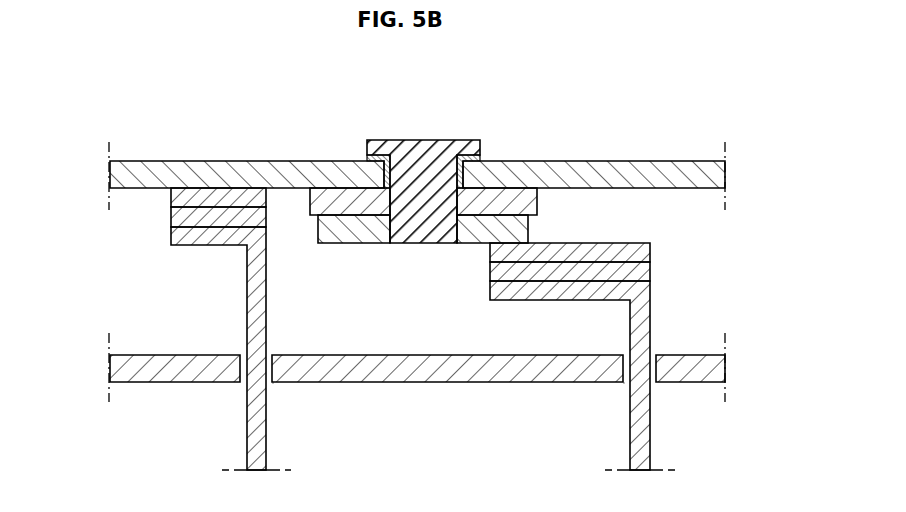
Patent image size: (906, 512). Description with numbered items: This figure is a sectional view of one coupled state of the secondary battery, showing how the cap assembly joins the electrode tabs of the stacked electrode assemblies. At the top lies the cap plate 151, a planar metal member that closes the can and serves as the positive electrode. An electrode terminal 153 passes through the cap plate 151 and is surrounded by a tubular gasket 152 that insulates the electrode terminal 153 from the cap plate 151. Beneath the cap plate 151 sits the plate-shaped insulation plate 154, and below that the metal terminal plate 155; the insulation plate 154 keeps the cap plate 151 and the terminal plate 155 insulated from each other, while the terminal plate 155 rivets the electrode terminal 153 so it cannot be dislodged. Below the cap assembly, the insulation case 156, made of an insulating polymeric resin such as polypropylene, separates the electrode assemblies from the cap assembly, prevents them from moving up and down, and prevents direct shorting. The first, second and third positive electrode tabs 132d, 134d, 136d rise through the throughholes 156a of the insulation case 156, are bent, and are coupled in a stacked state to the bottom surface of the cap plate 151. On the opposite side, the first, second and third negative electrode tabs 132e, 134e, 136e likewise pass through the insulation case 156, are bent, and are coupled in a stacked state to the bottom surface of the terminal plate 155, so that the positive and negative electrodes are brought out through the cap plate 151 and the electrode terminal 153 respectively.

The cap plate 151 is at (648, 175).
The gasket 152 is at (483, 157).
The electrode terminal 153 is at (429, 150).
The insulation plate 154 is at (517, 198).
The terminal plate 155 is at (320, 228).
The third positive electrode tab 136d is at (171, 198).
The second positive electrode tab 134d is at (171, 217).
The first positive electrode tab 132d is at (171, 237).
The third negative electrode tab 136e is at (646, 254).
The second negative electrode tab 134e is at (646, 273).
The first negative electrode tab 132e is at (633, 292).
The insulation case 156 is at (418, 374).
The throughhole 156a is at (272, 383).